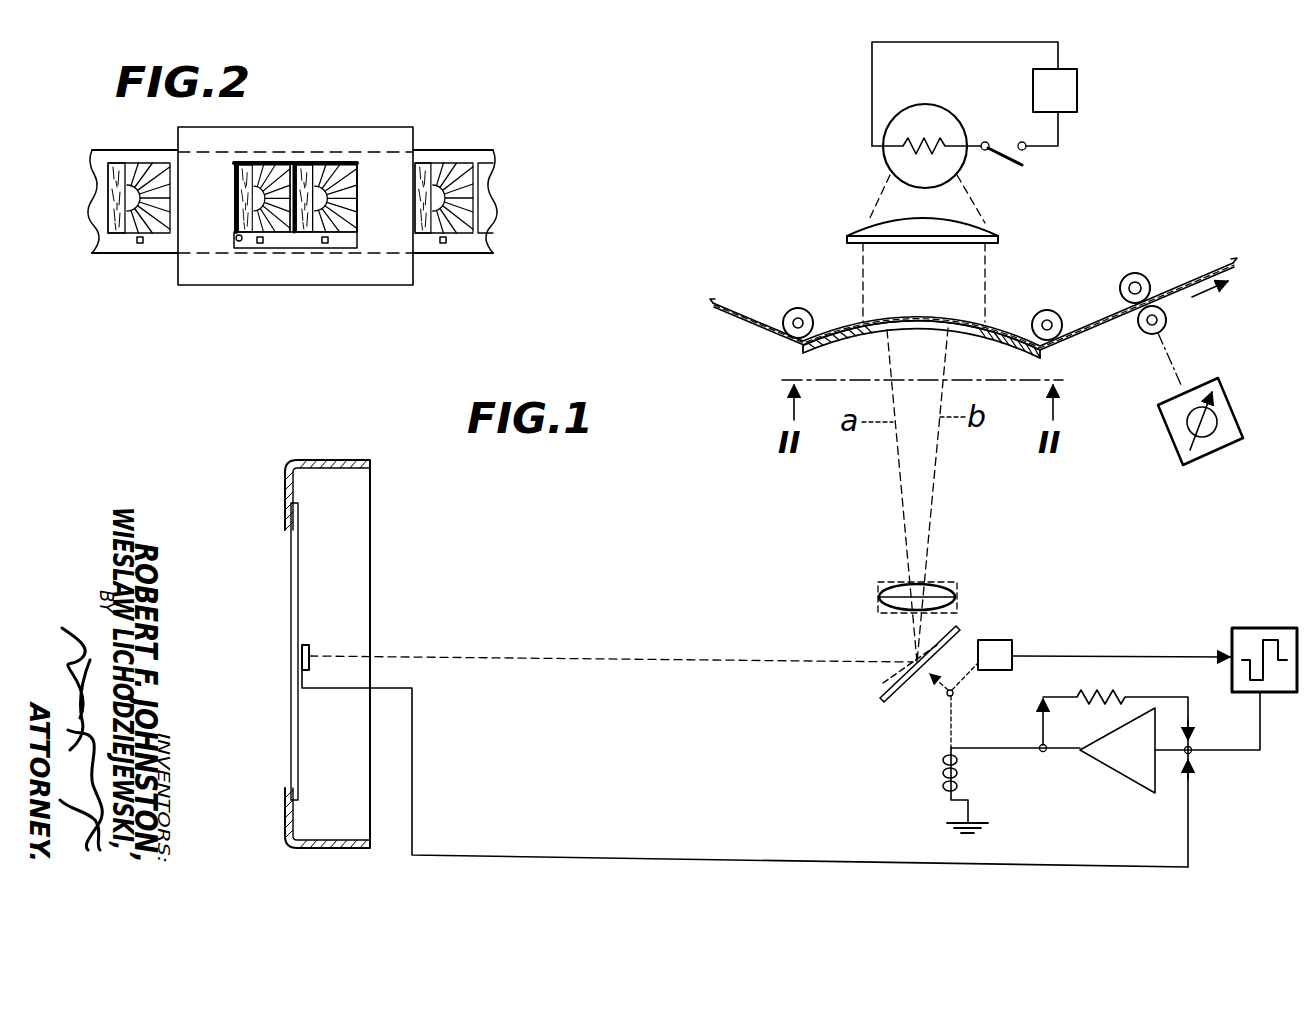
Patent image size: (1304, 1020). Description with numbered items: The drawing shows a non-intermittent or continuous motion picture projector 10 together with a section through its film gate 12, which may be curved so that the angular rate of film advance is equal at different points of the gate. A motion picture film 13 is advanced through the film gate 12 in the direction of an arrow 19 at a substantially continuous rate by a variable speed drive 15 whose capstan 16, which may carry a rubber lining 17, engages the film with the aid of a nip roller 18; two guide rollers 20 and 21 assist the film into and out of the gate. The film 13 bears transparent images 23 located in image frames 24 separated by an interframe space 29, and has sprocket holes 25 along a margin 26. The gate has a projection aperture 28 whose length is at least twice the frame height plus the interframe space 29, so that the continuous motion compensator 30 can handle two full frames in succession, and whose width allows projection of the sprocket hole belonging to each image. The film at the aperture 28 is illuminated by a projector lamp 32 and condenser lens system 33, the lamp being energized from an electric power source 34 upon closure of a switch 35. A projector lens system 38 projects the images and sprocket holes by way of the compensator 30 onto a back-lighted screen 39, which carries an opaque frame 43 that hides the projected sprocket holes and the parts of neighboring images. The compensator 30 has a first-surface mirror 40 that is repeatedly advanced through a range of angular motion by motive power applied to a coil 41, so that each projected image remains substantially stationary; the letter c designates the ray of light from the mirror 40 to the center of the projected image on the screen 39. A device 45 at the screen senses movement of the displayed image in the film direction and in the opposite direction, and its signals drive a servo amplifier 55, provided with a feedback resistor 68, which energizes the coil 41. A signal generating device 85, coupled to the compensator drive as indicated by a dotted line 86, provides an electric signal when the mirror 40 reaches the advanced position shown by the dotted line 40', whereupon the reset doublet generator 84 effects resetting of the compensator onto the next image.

In FIG. 1, the continuous motion picture projector 10 is at (790, 549).
In FIG. 2, the film gate 12 is at (195, 267).
In FIG. 1, the film gate 12 is at (803, 343).
In FIG. 2, the motion picture film 13 is at (90, 248).
In FIG. 1, the motion picture film 13 is at (760, 315).
In FIG. 1, the variable speed drive 15 is at (1232, 423).
In FIG. 1, the capstan 16 is at (1158, 320).
In FIG. 1, the rubber lining 17 is at (1145, 333).
In FIG. 1, the nip roller 18 is at (1130, 273).
In FIG. 1, the arrow 19 is at (1208, 294).
In FIG. 1, the guide roller 20 is at (817, 310).
In FIG. 1, the guide roller 21 is at (1057, 313).
In FIG. 2, the transparent images 23 is at (158, 162).
In FIG. 2, the image frames 24 is at (260, 164).
In FIG. 2, the sprocket holes 25 is at (138, 243).
In FIG. 2, the margin 26 is at (487, 243).
In FIG. 2, the projection aperture 28 is at (236, 237).
In FIG. 1, the projection aperture 28 is at (880, 330).
In FIG. 2, the interframe space 29 is at (292, 231).
In FIG. 1, the continuous motion compensator 30 is at (902, 700).
In FIG. 1, the projector lamp 32 is at (892, 160).
In FIG. 1, the condenser lens system 33 is at (847, 238).
In FIG. 1, the electric power source 34 is at (1077, 90).
In FIG. 1, the switch 35 is at (1005, 167).
In FIG. 1, the projector lens system 38 is at (880, 597).
In FIG. 1, the back-lighted screen 39 is at (290, 610).
In FIG. 1, the first-surface mirror 40 is at (946, 642).
In FIG. 1, the advanced mirror position 40' is at (868, 681).
In FIG. 1, the coil 41 is at (963, 768).
In FIG. 1, the opaque frame 43 is at (285, 502).
In FIG. 1, the sensing device 45 is at (307, 645).
In FIG. 1, the servo amplifier 55 is at (1127, 772).
In FIG. 1, the feedback resistor 68 is at (1114, 688).
In FIG. 1, the reset doublet generator 84 is at (1283, 632).
In FIG. 1, the signal generating device 85 is at (1013, 642).
In FIG. 1, the dotted line 86 is at (960, 683).
In FIG. 1, the ray of light c is at (602, 662).